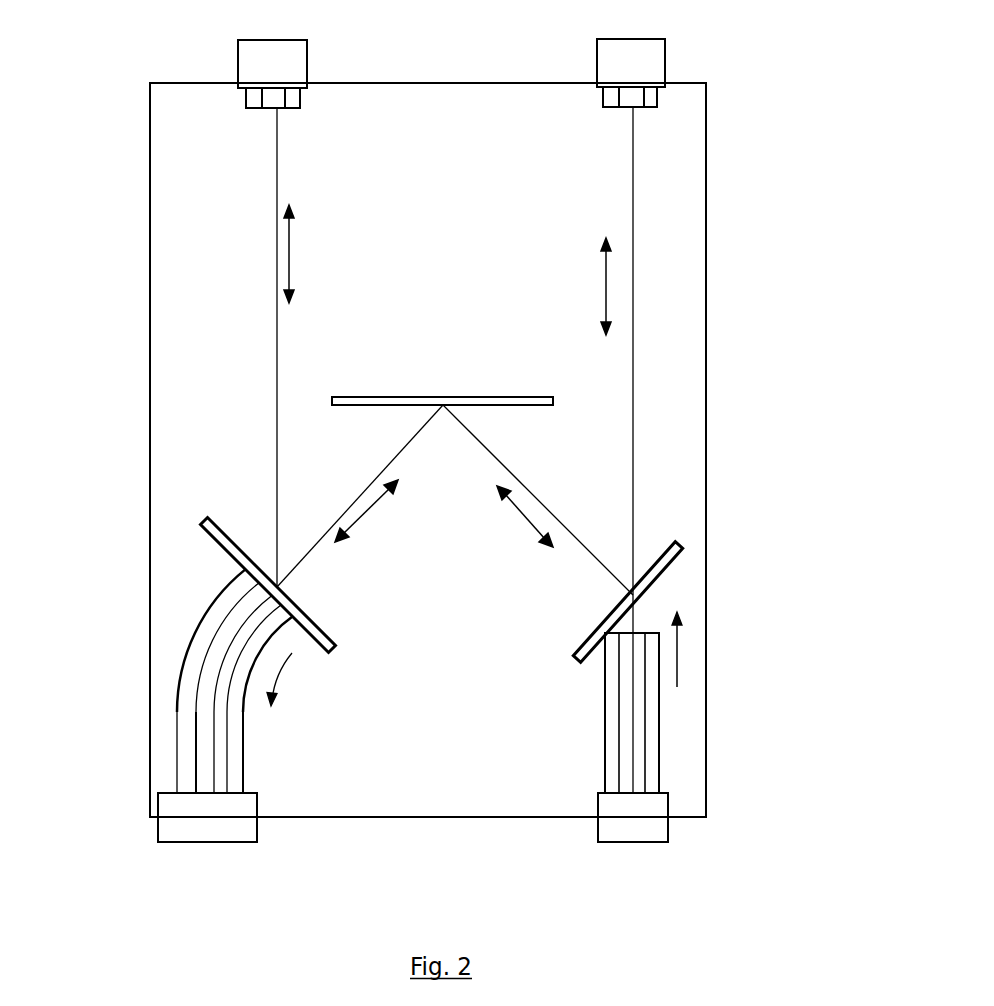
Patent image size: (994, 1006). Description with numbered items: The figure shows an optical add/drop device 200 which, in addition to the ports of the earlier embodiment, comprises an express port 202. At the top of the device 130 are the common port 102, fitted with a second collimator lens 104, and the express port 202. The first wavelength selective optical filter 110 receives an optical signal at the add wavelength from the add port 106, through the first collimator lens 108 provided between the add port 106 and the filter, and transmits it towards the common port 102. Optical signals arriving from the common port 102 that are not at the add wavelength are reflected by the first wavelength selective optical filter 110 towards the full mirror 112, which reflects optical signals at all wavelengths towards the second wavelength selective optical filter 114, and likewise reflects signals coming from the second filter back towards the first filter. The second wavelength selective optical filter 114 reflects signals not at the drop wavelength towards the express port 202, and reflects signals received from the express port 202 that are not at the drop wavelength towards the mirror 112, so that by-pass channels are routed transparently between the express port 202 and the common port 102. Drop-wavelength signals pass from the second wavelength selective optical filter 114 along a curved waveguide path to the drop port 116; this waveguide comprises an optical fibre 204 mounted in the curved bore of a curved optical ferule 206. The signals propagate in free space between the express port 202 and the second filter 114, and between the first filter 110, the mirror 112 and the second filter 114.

The optical add/drop device 200 is at (148, 140).
The express port 202 is at (288, 63).
The common port 102 is at (646, 63).
The second collimator lens 104 is at (302, 97).
The device 130 is at (178, 321).
The full mirror 112 is at (409, 396).
The second wavelength selective optical filter 114 is at (228, 547).
The first wavelength selective optical filter 110 is at (663, 572).
The optical fibre 204 is at (195, 717).
The curved optical ferule 206 is at (177, 777).
The drop port 116 is at (207, 822).
The first collimator lens 108 is at (646, 721).
The add port 106 is at (634, 823).